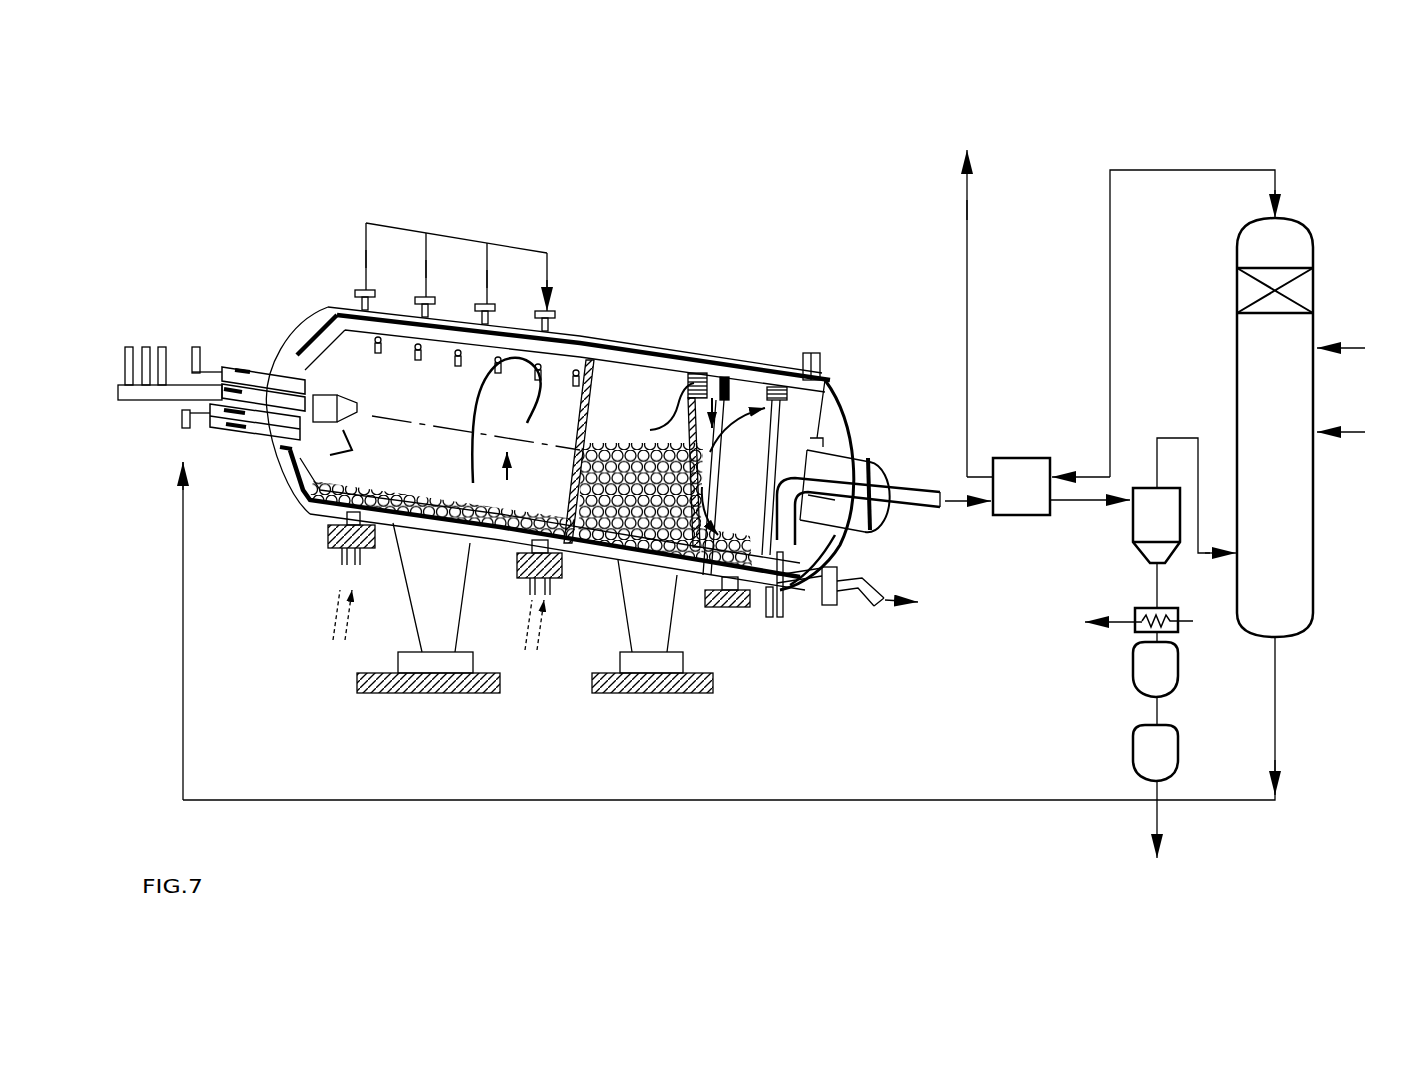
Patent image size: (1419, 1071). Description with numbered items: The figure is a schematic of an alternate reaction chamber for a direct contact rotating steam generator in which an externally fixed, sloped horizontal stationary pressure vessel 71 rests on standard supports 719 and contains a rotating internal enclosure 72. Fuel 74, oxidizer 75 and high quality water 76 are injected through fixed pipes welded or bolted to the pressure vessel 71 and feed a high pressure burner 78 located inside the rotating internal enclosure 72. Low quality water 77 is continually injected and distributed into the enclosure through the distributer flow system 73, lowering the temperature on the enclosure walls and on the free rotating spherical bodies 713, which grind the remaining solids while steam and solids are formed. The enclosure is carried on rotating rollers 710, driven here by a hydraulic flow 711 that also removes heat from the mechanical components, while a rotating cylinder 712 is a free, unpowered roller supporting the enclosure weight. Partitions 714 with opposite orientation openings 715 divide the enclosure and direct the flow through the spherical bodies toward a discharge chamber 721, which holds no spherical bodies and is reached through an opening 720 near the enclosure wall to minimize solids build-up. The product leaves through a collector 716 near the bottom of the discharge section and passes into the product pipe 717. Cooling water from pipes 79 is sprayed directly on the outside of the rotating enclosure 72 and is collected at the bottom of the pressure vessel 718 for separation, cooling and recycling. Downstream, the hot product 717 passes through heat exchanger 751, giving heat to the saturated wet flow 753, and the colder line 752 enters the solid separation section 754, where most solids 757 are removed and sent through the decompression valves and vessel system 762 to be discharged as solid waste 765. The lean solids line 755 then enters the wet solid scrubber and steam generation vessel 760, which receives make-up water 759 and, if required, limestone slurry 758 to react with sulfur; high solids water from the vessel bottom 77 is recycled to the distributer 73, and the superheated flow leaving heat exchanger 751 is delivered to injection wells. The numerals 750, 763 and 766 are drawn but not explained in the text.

The stationary pressure vessel 71 is at (305, 322).
The rotating internal enclosure 72 is at (560, 340).
The distributer flow system 73 is at (398, 345).
The fuel 74 is at (128, 330).
The oxidizer 75 is at (143, 330).
The high quality water 76 is at (160, 330).
The low quality water 77 is at (195, 330).
The high pressure burner 78 is at (345, 540).
The cooling water pipes 79 is at (473, 240).
The rotating rollers 710 is at (340, 547).
The hydraulic flow 711 is at (337, 640).
The rotating cylinder 712 is at (727, 610).
The rotating spherical bodies 713 is at (388, 520).
The partitions 714 is at (590, 358).
The opposite orientation openings 715 is at (655, 360).
The collector 716 is at (779, 590).
The product pipe 717 is at (915, 495).
The cooling water discharge 718 is at (866, 600).
The standard supports 719 is at (627, 693).
The opening 720 is at (790, 383).
The discharge chamber 721 is at (800, 413).
The gas line 750 is at (967, 220).
The heat exchanger 751 is at (1010, 468).
The colder line 752 is at (1082, 502).
The saturated wet flow 753 is at (1170, 170).
The solid separation section 754 is at (1145, 497).
The lean solids line 755 is at (1172, 438).
The rejected solids line 757 is at (1157, 575).
The limestone slurry 758 is at (1368, 350).
The make-up water 759 is at (1368, 434).
The wet solid scrubber and steam generation vessel 760 is at (1300, 330).
The decompression valves and vessel system 762 is at (1134, 743).
The heat exchanger 763 is at (1145, 630).
The solid waste 765 is at (1153, 817).
The gas flow 766 is at (973, 550).